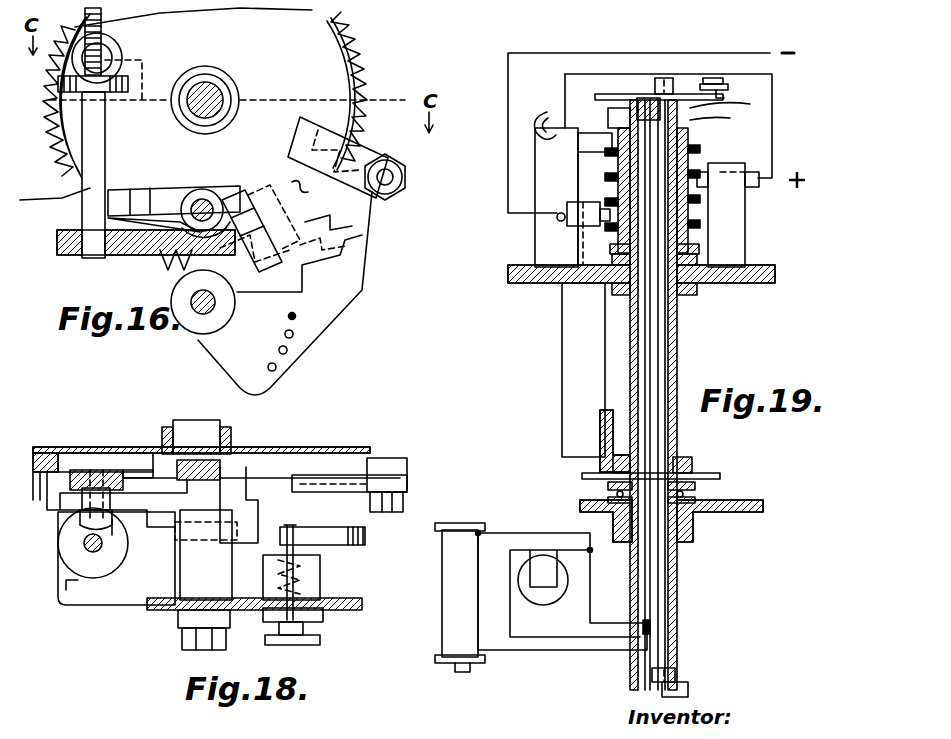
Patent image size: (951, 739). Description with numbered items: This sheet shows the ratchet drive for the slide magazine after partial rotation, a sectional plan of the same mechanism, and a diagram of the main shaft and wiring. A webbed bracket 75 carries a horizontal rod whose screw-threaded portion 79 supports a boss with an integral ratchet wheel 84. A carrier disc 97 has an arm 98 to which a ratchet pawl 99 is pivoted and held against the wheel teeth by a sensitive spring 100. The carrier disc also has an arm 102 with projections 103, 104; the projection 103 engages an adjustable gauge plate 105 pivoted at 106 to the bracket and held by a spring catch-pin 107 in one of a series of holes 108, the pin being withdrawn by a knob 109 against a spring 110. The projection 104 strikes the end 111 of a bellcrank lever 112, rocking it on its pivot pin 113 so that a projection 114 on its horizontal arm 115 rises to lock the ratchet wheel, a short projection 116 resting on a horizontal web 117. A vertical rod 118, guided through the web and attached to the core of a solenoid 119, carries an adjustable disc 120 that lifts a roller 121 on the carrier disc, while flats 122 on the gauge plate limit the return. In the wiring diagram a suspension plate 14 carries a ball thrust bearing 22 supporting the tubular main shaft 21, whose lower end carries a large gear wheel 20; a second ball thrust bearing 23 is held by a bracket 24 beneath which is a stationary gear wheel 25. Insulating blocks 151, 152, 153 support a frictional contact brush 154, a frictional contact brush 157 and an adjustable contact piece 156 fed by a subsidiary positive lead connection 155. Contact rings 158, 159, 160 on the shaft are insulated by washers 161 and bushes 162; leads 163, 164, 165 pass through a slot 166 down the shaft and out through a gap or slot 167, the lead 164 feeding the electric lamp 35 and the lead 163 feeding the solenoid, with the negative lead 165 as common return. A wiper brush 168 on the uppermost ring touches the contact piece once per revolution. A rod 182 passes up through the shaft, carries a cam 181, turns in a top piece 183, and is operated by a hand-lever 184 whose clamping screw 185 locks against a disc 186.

In FIG. 19, the suspension plate 14 is at (775, 276).
In FIG. 19, the large gear wheel 20 is at (735, 512).
In FIG. 19, the main shaft 21 is at (688, 130).
In FIG. 19, the ball thrust bearing 22 is at (688, 286).
In FIG. 19, the second ball thrust bearing 23 is at (698, 490).
In FIG. 19, the bracket 24 is at (600, 440).
In FIG. 19, the stationary gear wheel 25 is at (722, 476).
In FIG. 19, the electric lamp 35 is at (552, 585).
In FIG. 18, the webbed bracket 75 is at (175, 588).
In FIG. 16, the stepped portion 79 is at (222, 97).
In FIG. 16, the ratchet wheel 84 is at (342, 40).
In FIG. 18, the ratchet wheel 84 is at (322, 447).
In FIG. 16, the carrier disc 97 is at (207, 96).
In FIG. 16, the arm 98 is at (338, 157).
In FIG. 18, the arm 98 is at (392, 488).
In FIG. 16, the ratchet pawl 99 is at (400, 192).
In FIG. 18, the ratchet pawl 99 is at (380, 470).
In FIG. 16, the sensitive spring 100 is at (284, 177).
In FIG. 16, the arm 102 is at (238, 196).
In FIG. 16, the projection 103 is at (274, 217).
In FIG. 18, the projection 103 is at (258, 512).
In FIG. 16, the projection 104 is at (262, 292).
In FIG. 16, the gauge plate 105 is at (285, 293).
In FIG. 18, the gauge plate 105 is at (366, 536).
In FIG. 16, the pivot 106 is at (192, 318).
In FIG. 16, the spring catch-pin 107 is at (296, 318).
In FIG. 18, the spring catch-pin 107 is at (300, 545).
In FIG. 16, the holes 108 is at (276, 368).
In FIG. 18, the holes 108 is at (294, 526).
In FIG. 18, the knob 109 is at (320, 640).
In FIG. 18, the spring 110 is at (300, 584).
In FIG. 16, the end 111 is at (283, 261).
In FIG. 16, the bellcrank lever 112 is at (170, 196).
In FIG. 18, the bellcrank lever 112 is at (222, 530).
In FIG. 16, the pivot pin 113 is at (206, 190).
In FIG. 16, the projection 114 is at (55, 200).
In FIG. 18, the projection 114 is at (42, 498).
In FIG. 16, the horizontal arm 115 is at (118, 190).
In FIG. 18, the horizontal arm 115 is at (138, 478).
In FIG. 16, the short projection 116 is at (140, 195).
In FIG. 18, the short projection 116 is at (150, 500).
In FIG. 16, the horizontal web 117 is at (120, 256).
In FIG. 18, the horizontal web 117 is at (130, 570).
In FIG. 16, the vertical rod 118 is at (98, 120).
In FIG. 19, the solenoid 119 is at (442, 602).
In FIG. 16, the disc 120 is at (142, 62).
In FIG. 18, the disc 120 is at (82, 560).
In FIG. 16, the roller 121 is at (118, 48).
In FIG. 18, the roller 121 is at (80, 520).
In FIG. 16, the flats 122 is at (335, 245).
In FIG. 19, the insulating block 151 is at (746, 250).
In FIG. 19, the insulating block 152 is at (586, 280).
In FIG. 19, the insulating block 153 is at (561, 170).
In FIG. 19, the frictional contact brush 154 is at (712, 186).
In FIG. 19, the subsidiary positive lead connection 155 is at (773, 146).
In FIG. 19, the adjustable contact piece 156 is at (560, 120).
In FIG. 19, the frictional contact brush 157 is at (557, 220).
In FIG. 19, the contact ring 158 is at (690, 146).
In FIG. 19, the contact ring 159 is at (700, 190).
In FIG. 19, the contact ring 160 is at (702, 223).
In FIG. 19, the washers 161 is at (702, 160).
In FIG. 19, the bushes 162 is at (732, 120).
In FIG. 19, the positive lead 163 is at (650, 318).
In FIG. 19, the positive lead 164 is at (645, 340).
In FIG. 19, the negative lead 165 is at (640, 370).
In FIG. 19, the slot 166 is at (628, 112).
In FIG. 19, the gap or slot 167 is at (645, 640).
In FIG. 19, the wiper brush 168 is at (604, 142).
In FIG. 19, the cam 181 is at (692, 686).
In FIG. 19, the rod 182 is at (678, 574).
In FIG. 19, the top piece 183 is at (752, 104).
In FIG. 19, the hand-lever 184 is at (690, 92).
In FIG. 19, the clamping screw 185 is at (718, 78).
In FIG. 19, the disc 186 is at (640, 98).